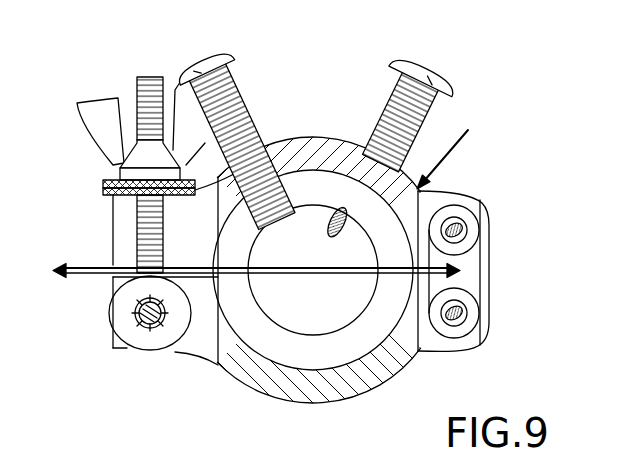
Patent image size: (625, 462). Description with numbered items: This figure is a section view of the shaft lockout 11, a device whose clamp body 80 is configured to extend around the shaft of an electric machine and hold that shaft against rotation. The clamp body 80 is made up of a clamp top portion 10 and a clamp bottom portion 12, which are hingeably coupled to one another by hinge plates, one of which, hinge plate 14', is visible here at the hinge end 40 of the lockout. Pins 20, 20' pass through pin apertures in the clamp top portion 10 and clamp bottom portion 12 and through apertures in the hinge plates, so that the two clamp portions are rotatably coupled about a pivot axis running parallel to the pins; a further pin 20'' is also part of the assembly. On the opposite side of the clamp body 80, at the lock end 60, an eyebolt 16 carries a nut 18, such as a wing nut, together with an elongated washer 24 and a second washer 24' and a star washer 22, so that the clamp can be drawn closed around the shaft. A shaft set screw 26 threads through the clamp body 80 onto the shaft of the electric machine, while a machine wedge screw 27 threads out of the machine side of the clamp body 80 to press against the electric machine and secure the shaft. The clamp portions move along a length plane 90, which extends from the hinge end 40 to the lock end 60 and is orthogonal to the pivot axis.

The clamp top portion 10 is at (307, 138).
The shaft lockout 11 is at (456, 151).
The clamp bottom portion 12 is at (310, 385).
The hinge plate 14' is at (499, 271).
The eyebolt 16 is at (148, 76).
The nut 18 is at (96, 108).
The pin 20 is at (496, 217).
The pin 20' is at (500, 334).
The pin 20'' is at (117, 343).
The star washer 22 is at (108, 310).
The elongated washer 24 is at (125, 169).
The washer 24' is at (126, 207).
The shaft set screw 26 is at (200, 62).
The machine wedge screw 27 is at (420, 63).
The hinge end 40 is at (474, 297).
The lock end 60 is at (113, 248).
The clamp body 80 is at (287, 140).
The length plane 90 is at (313, 273).